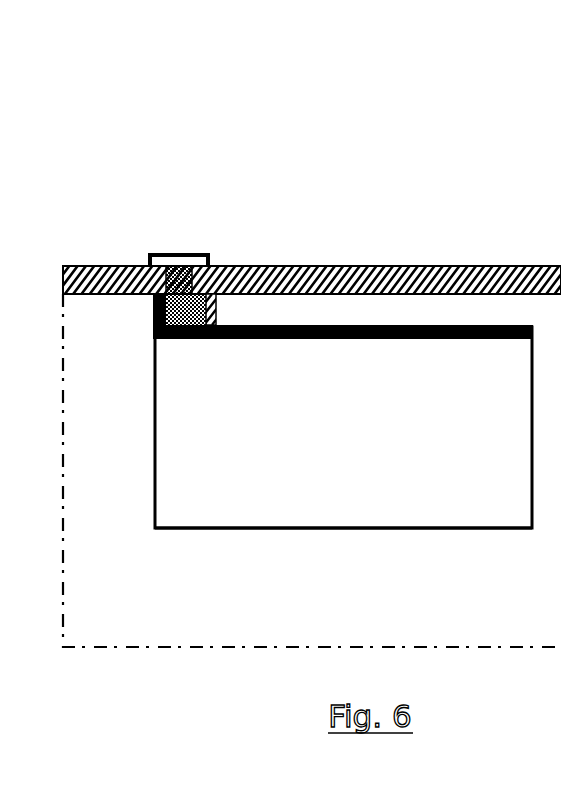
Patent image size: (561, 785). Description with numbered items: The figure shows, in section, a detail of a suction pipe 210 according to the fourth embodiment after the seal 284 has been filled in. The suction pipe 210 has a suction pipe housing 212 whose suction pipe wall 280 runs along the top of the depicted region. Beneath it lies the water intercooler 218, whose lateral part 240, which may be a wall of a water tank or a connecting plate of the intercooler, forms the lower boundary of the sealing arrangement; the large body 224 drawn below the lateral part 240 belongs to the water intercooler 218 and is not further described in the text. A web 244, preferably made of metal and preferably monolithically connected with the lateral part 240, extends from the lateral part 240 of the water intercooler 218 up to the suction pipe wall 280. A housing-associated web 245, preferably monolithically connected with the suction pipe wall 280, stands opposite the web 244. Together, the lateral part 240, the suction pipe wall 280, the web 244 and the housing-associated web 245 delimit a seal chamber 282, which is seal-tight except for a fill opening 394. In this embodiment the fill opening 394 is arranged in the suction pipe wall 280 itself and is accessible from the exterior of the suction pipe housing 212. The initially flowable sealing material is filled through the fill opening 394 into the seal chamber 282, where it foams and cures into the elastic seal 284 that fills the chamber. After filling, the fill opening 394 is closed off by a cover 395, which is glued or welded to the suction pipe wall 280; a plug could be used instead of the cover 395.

The suction pipe 210 is at (90, 93).
The suction pipe housing 212 is at (540, 253).
The water intercooler 218 is at (461, 545).
The body 224 is at (272, 492).
The lateral part 240 is at (490, 339).
The web 244 is at (153, 311).
The housing-associated web 245 is at (217, 308).
The suction pipe wall 280 is at (452, 267).
The seal chamber 282 is at (194, 313).
The seal 284 is at (166, 289).
The fill opening 394 is at (188, 265).
The cover 395 is at (183, 276).